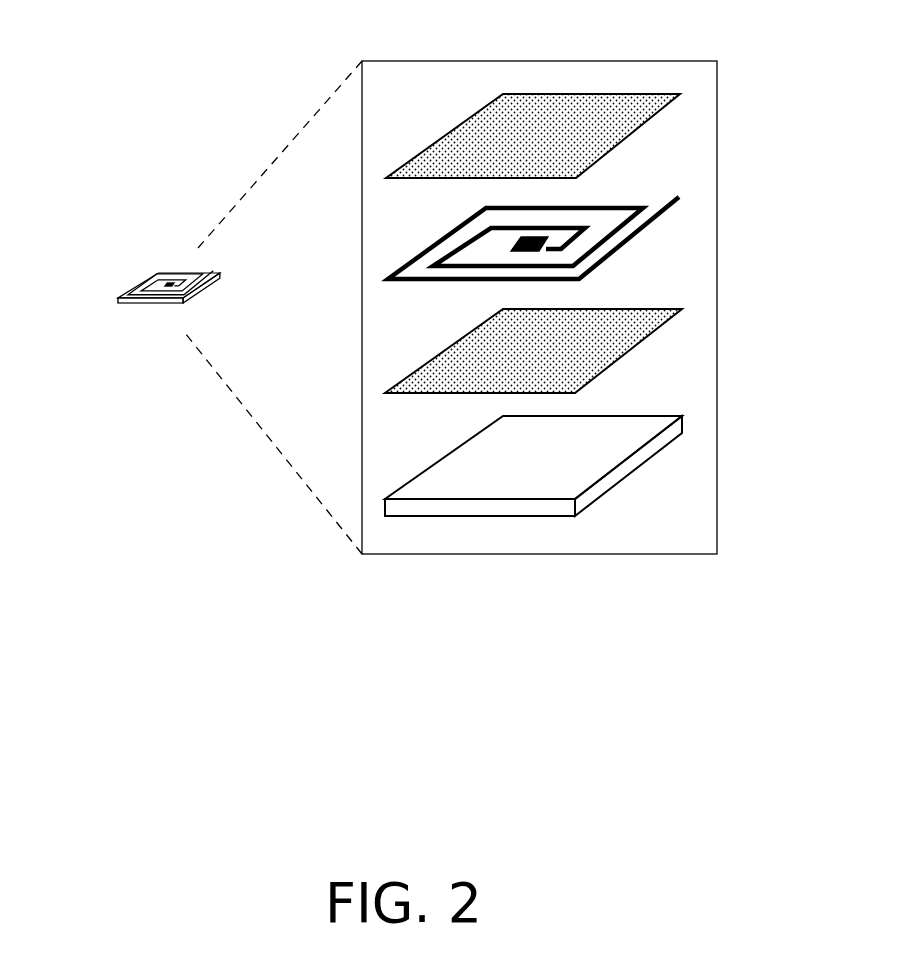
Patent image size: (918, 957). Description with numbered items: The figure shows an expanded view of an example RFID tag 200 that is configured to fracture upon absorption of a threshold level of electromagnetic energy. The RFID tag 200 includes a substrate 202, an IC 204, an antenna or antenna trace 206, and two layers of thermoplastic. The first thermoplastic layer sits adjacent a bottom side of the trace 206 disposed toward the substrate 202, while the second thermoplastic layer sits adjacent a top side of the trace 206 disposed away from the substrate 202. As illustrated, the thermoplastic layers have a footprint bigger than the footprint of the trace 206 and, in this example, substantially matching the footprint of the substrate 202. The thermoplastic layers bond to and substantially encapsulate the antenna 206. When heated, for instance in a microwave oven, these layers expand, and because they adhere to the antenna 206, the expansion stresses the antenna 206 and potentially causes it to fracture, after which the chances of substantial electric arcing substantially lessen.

The RFID tag 200 is at (148, 243).
The substrate 202 is at (448, 528).
The IC 204 is at (545, 238).
The antenna 206 is at (655, 190).